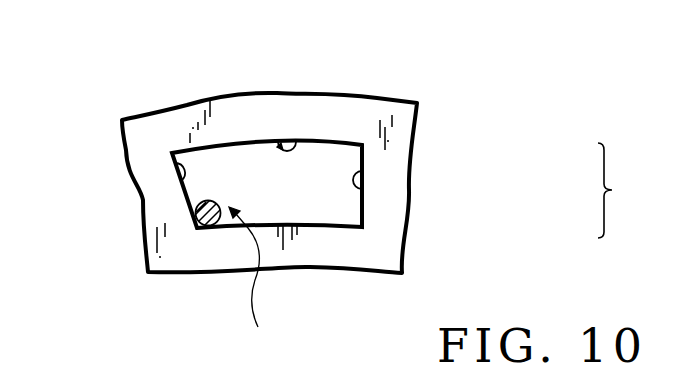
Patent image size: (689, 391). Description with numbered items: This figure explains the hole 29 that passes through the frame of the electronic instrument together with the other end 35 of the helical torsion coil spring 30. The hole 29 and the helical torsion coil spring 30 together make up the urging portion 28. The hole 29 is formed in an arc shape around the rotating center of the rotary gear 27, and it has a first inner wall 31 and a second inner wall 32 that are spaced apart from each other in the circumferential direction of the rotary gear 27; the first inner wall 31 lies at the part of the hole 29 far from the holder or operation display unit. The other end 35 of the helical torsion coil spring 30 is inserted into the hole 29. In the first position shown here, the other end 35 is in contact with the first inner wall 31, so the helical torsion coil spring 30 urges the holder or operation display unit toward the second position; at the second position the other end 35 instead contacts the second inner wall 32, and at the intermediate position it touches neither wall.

The rotary gear 27 is at (357, 252).
The urging portion 28 is at (625, 190).
The hole 29 is at (302, 142).
The helical torsion coil spring 30 is at (413, 284).
The first inner wall 31 is at (176, 168).
The second inner wall 32 is at (350, 178).
The other end 35 is at (200, 228).